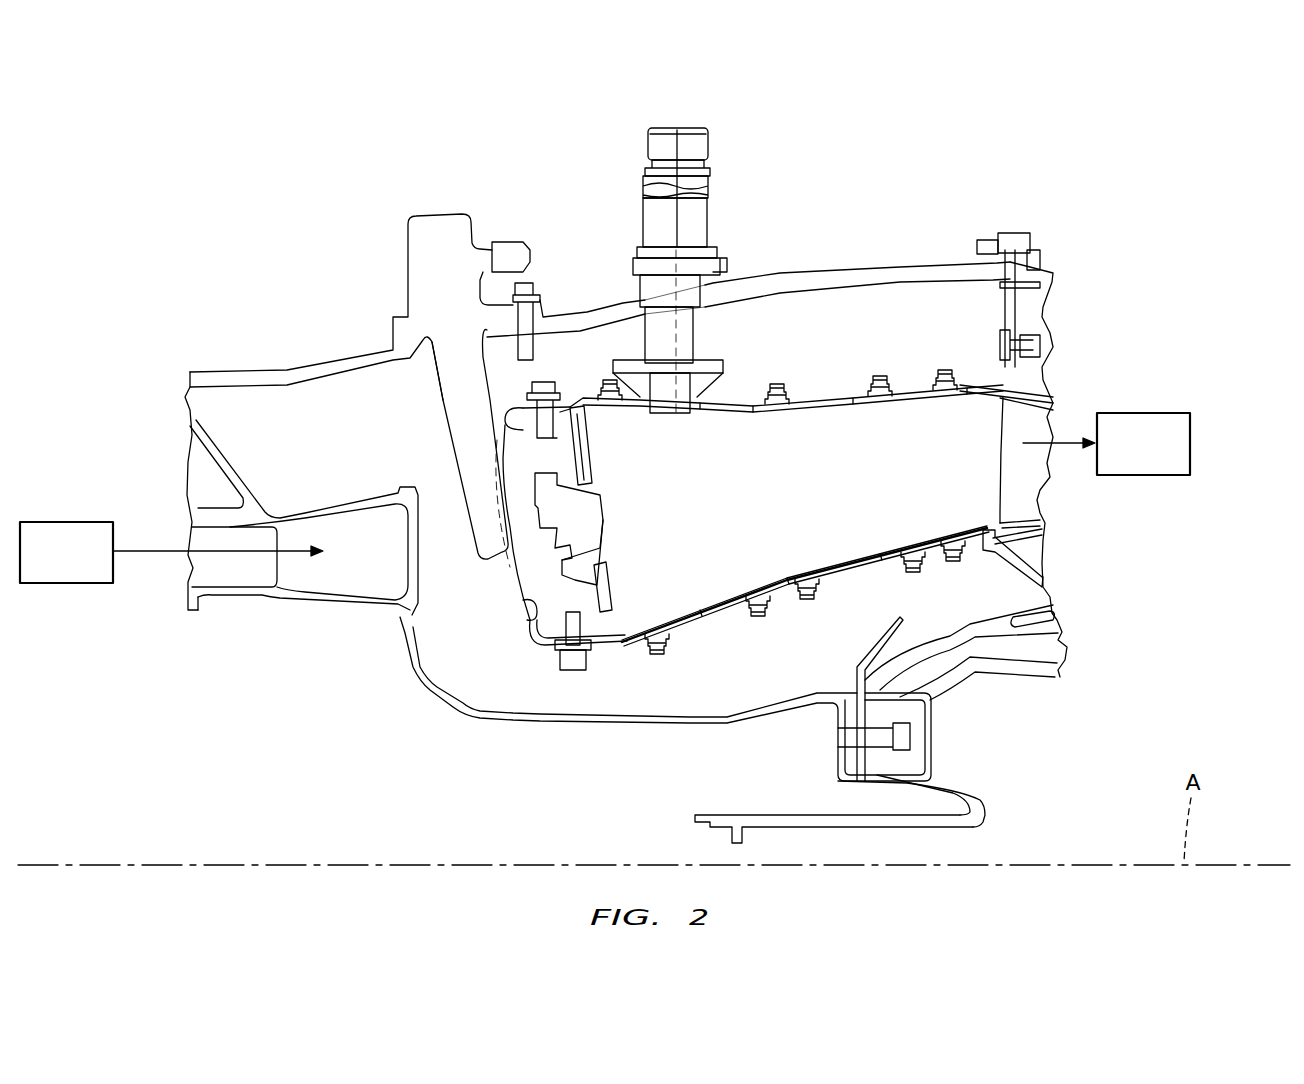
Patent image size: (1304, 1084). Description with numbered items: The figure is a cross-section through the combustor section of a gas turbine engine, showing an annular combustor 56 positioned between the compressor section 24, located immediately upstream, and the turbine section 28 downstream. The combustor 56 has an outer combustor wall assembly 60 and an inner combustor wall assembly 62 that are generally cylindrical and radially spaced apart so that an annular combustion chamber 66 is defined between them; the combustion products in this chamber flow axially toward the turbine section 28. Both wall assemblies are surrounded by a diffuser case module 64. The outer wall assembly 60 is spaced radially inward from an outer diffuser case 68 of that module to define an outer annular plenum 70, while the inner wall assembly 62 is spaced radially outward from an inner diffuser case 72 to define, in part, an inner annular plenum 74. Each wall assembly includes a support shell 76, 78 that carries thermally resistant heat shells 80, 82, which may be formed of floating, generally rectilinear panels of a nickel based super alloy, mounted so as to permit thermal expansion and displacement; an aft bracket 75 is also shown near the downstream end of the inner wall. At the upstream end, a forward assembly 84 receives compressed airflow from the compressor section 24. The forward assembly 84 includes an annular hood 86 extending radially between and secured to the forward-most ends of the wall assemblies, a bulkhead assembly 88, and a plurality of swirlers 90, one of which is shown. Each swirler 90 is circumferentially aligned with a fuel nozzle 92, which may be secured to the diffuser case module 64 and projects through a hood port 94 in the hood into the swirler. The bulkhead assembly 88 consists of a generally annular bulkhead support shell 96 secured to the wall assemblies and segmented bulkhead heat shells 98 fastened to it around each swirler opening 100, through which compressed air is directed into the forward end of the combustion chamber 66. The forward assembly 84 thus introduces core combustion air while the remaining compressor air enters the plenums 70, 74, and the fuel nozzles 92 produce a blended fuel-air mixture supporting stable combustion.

The compressor section 24 is at (54, 563).
The turbine section 28 is at (1131, 457).
The annular combustor 56 is at (933, 172).
The outer combustor wall assembly 60 is at (840, 382).
The inner combustor wall assembly 62 is at (790, 604).
The diffuser case module 64 is at (835, 260).
The annular combustion chamber 66 is at (797, 481).
The outer diffuser case 68 is at (764, 284).
The outer annular plenum 70 is at (747, 335).
The inner diffuser case 72 is at (654, 726).
The inner annular plenum 74 is at (719, 673).
The aft bracket 75 is at (955, 565).
The support shell 76 is at (806, 398).
The support shell 78 is at (882, 562).
The heat shell 80 is at (710, 413).
The heat shell 82 is at (712, 600).
The forward assembly 84 is at (518, 660).
The annular hood 86 is at (528, 615).
The bulkhead assembly 88 is at (604, 463).
The swirler 90 is at (610, 565).
The fuel nozzle 92 is at (447, 360).
The hood port 94 is at (514, 590).
The bulkhead support shell 96 is at (535, 627).
The bulkhead heat shell 98 is at (620, 592).
The swirler opening 100 is at (600, 520).